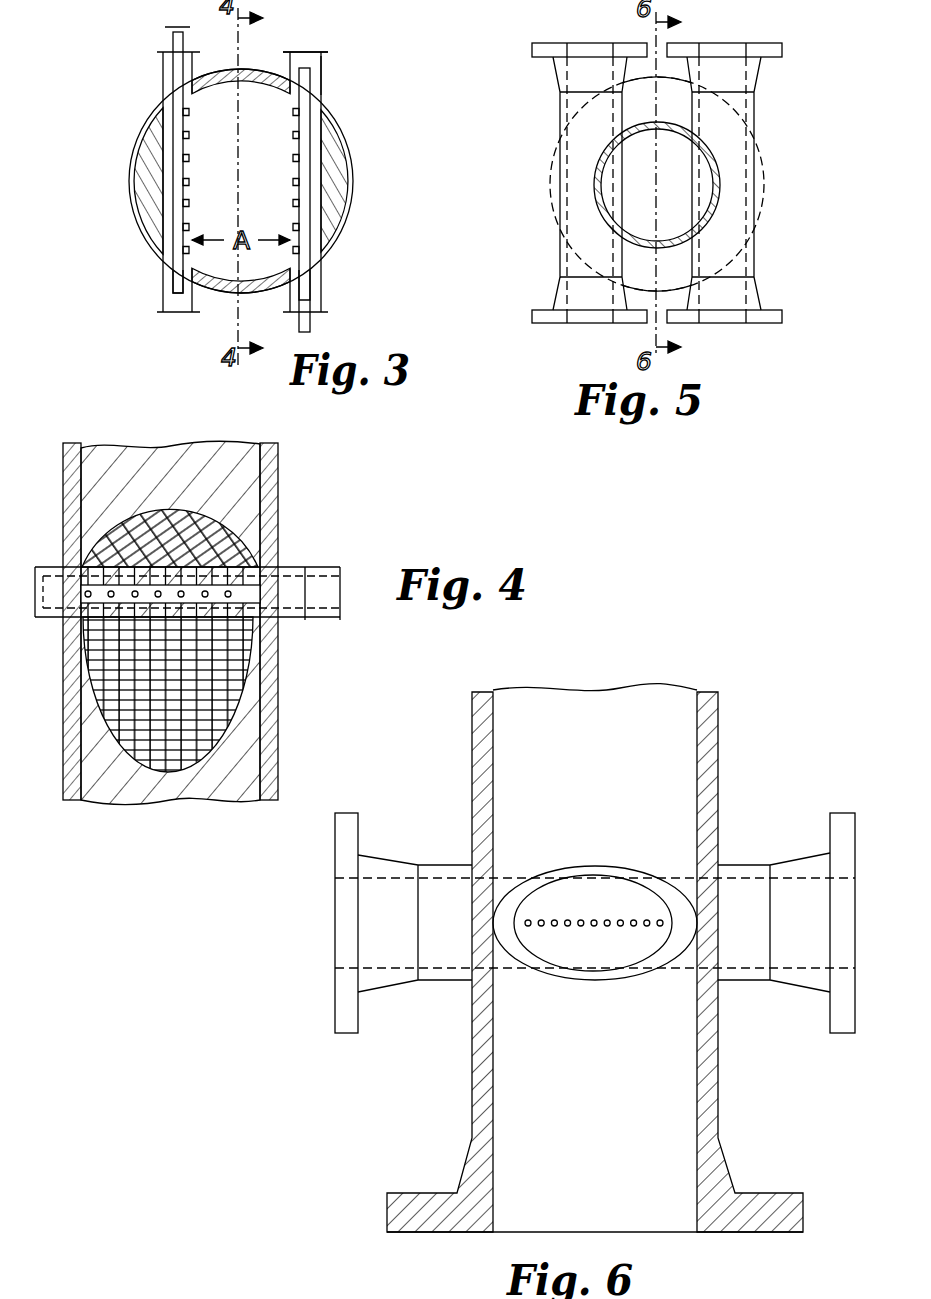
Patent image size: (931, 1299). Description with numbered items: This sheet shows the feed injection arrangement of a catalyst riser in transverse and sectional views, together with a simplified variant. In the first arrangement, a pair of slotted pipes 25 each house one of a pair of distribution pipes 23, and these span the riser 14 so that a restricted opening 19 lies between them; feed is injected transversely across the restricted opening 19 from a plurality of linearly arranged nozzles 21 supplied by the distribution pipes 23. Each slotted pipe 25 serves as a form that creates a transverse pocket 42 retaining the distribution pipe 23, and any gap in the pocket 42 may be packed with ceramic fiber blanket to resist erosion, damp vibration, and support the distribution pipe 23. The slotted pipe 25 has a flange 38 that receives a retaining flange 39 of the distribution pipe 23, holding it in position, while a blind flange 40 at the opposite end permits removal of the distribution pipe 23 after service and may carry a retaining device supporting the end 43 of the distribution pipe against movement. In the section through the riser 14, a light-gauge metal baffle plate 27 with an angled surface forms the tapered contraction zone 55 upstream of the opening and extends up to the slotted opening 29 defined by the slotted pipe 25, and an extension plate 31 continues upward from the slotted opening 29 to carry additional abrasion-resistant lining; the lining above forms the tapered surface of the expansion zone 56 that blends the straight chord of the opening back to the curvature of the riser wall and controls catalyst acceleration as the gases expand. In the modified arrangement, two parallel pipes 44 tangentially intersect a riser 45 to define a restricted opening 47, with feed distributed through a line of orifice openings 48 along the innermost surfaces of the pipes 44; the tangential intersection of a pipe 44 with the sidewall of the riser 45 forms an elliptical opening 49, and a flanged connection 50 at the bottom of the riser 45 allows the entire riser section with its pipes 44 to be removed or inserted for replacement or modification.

In FIG. 4, the riser 14 is at (278, 478).
In FIG. 3, the restricted opening 19 is at (247, 118).
In FIG. 3, the nozzles 21 is at (295, 184).
In FIG. 3, the distribution pipe 23 is at (177, 273).
In FIG. 3, the slotted pipe 25 is at (163, 80).
In FIG. 4, the metal baffle plate 27 is at (123, 672).
In FIG. 4, the slotted opening 29 is at (112, 597).
In FIG. 4, the extension plate 31 is at (247, 567).
In FIG. 3, the flange 38 is at (321, 306).
In FIG. 4, the flange 38 is at (292, 567).
In FIG. 3, the retaining flange 39 is at (313, 321).
In FIG. 4, the retaining flange 39 is at (305, 567).
In FIG. 3, the blind flange 40 is at (308, 52).
In FIG. 4, the blind flange 40 is at (35, 567).
In FIG. 3, the transverse pocket 42 is at (307, 167).
In FIG. 3, the end of distribution pipe 43 is at (321, 72).
In FIG. 5, the parallel pipes 44 is at (560, 270).
In FIG. 6, the parallel pipes 44 is at (733, 865).
In FIG. 5, the riser 45 is at (720, 162).
In FIG. 6, the riser 45 is at (472, 805).
In FIG. 5, the restricted opening 47 is at (665, 198).
In FIG. 6, the orifice openings 48 is at (605, 927).
In FIG. 6, the elliptical opening 49 is at (558, 967).
In FIG. 5, the flanged connection 50 is at (578, 115).
In FIG. 6, the flanged connection 50 is at (420, 1212).
In FIG. 4, the contraction zone 55 is at (142, 710).
In FIG. 3, the expansion zone 56 is at (327, 145).
In FIG. 4, the expansion zone 56 is at (168, 540).